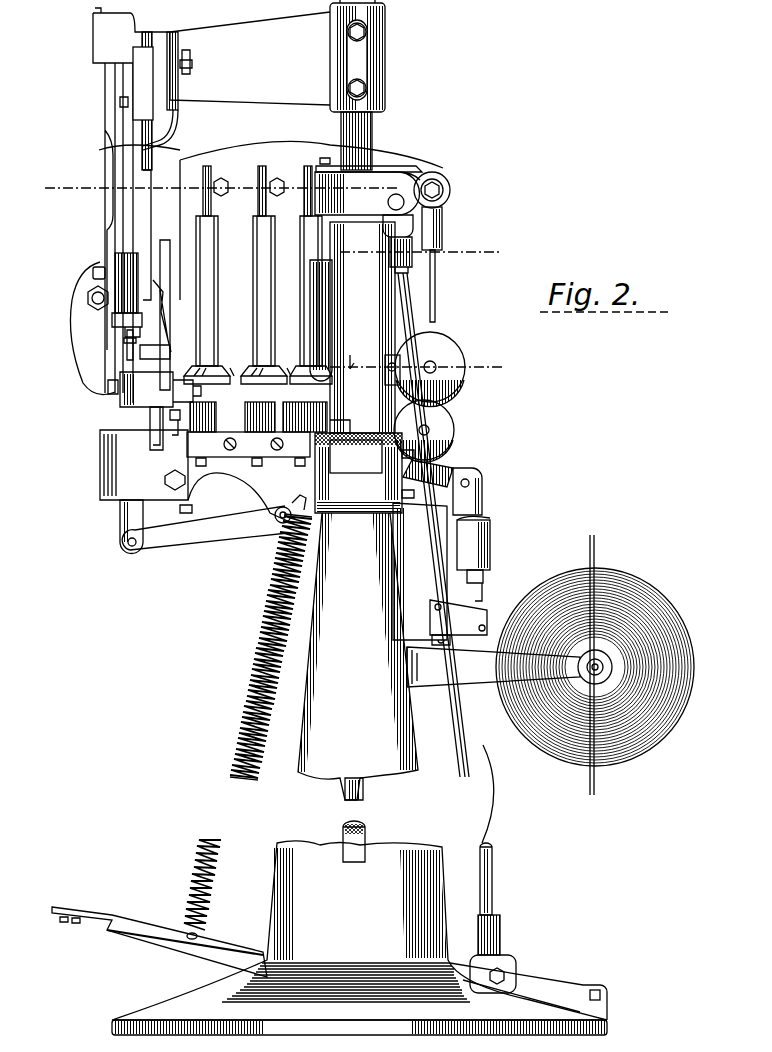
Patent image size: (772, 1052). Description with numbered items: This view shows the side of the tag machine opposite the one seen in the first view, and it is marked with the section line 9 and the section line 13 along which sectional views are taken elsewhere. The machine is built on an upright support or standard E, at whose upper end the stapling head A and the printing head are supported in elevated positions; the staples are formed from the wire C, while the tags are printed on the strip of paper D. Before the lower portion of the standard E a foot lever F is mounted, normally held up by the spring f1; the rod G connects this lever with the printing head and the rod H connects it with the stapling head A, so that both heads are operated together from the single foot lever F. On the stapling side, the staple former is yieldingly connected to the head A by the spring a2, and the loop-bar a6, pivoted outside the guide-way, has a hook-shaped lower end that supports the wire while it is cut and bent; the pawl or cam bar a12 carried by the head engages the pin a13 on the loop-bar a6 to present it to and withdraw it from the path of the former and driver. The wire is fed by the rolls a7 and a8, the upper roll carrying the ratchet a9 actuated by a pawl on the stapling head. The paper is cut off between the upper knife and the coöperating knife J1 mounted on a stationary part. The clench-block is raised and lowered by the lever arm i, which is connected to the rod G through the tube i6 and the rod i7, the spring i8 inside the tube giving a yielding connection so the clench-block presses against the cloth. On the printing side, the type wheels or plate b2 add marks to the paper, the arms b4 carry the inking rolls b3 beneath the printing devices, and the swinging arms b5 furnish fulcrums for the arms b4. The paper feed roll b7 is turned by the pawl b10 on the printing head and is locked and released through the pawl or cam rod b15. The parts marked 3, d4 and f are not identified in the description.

The stapling head A is at (236, 31).
The section line 9— 9 is at (489, 246).
The section line 13— 13 is at (475, 340).
The pawl or cam bar a12 is at (103, 155).
The spring a2 is at (134, 134).
The feed roll a8 is at (175, 209).
The pin a13 is at (92, 272).
The feed roll a7 is at (130, 320).
The ratchet a9 is at (135, 339).
The wire C is at (140, 350).
The loop-bar a6 is at (100, 388).
The coöperating knife J1 is at (152, 425).
The spring i8 is at (140, 420).
The pin d4 is at (180, 395).
The lever arm i is at (206, 534).
The type wheels or plate b2 is at (208, 252).
The swinging arms b5 is at (289, 240).
The arms b4 is at (262, 325).
The inking rolls b3 is at (258, 370).
The pin 3 is at (344, 365).
The upright support or standard E is at (415, 775).
The rod H is at (380, 785).
The feed roll b7 is at (460, 385).
The pawl b10 is at (437, 308).
The pawl or cam rod b15 is at (408, 308).
The strip of paper D is at (452, 470).
The tube i6 is at (487, 517).
The rod i7 is at (483, 595).
The rod G is at (460, 752).
The spring f1 is at (262, 650).
The foot lever F is at (150, 930).
The lever f is at (596, 985).